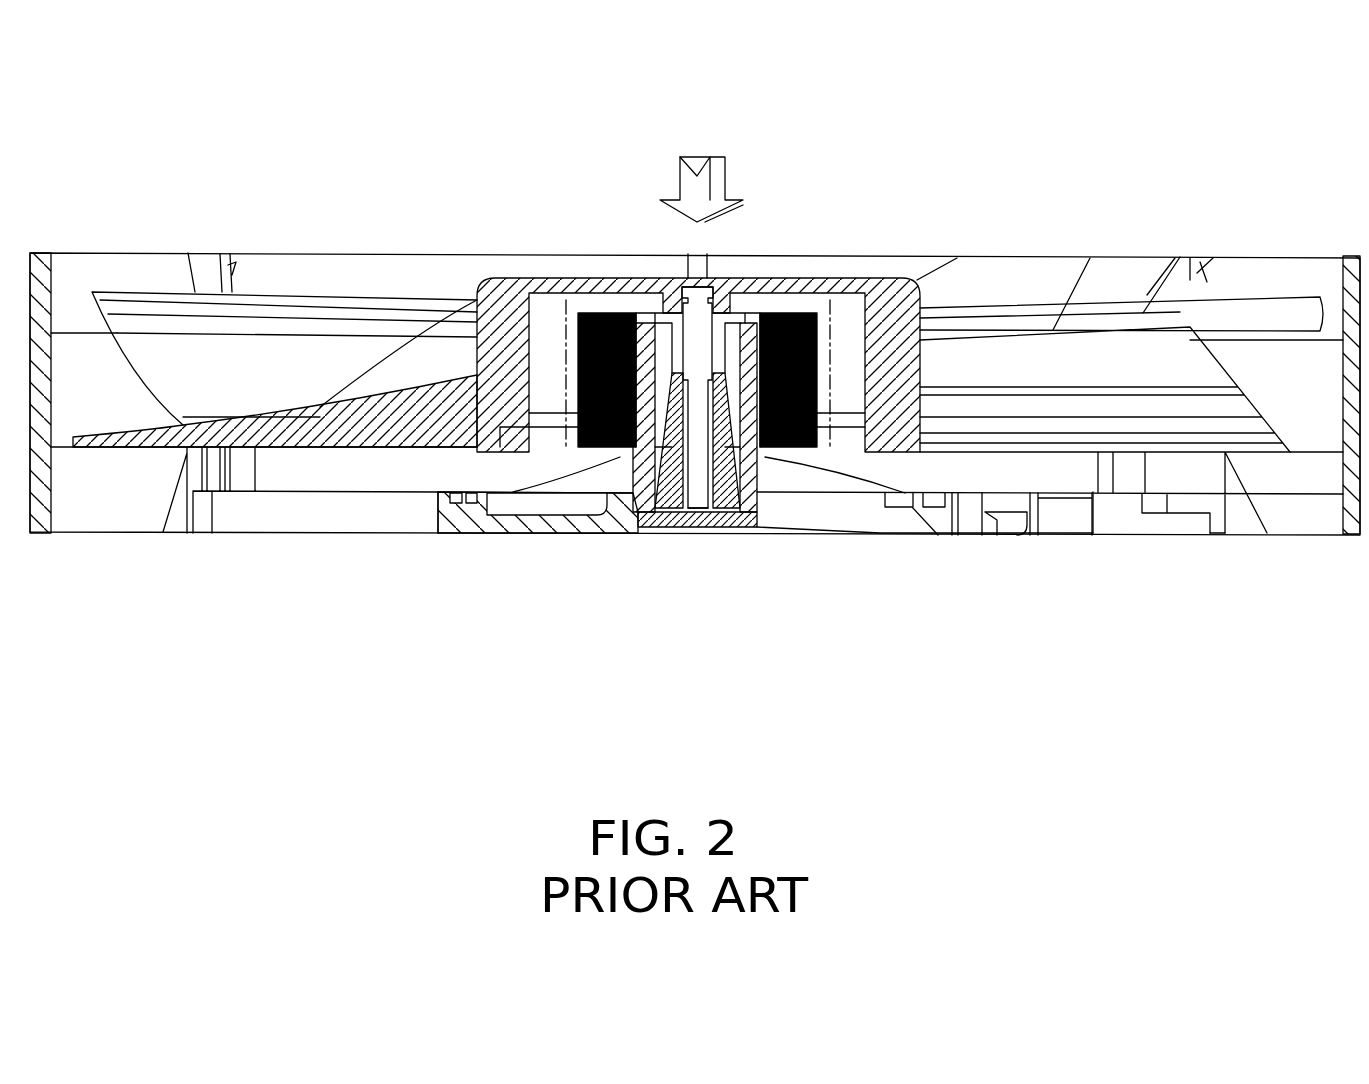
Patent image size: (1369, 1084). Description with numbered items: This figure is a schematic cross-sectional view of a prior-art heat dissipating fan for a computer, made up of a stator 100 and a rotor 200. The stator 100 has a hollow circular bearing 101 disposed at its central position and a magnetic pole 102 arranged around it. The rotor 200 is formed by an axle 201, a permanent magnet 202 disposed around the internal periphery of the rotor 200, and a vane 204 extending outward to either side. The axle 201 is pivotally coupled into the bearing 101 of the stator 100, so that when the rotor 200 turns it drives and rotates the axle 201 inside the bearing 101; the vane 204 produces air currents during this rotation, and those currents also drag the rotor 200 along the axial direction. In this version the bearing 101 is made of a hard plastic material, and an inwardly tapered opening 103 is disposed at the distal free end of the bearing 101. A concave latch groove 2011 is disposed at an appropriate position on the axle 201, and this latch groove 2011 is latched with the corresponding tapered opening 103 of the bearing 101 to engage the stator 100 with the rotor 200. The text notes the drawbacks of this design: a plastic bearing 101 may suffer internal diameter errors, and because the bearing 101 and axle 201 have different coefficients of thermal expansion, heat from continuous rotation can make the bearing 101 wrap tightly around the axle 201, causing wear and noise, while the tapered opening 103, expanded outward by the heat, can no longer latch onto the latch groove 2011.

The stator 100 is at (578, 553).
The bearing 101 is at (657, 530).
The magnetic pole 102 is at (802, 315).
The tapered opening 103 is at (742, 455).
The rotor 200 is at (617, 236).
The axle 201 is at (693, 358).
The latch groove 2011 is at (700, 527).
The permanent magnet 202 is at (550, 320).
The vane 204 is at (1053, 330).